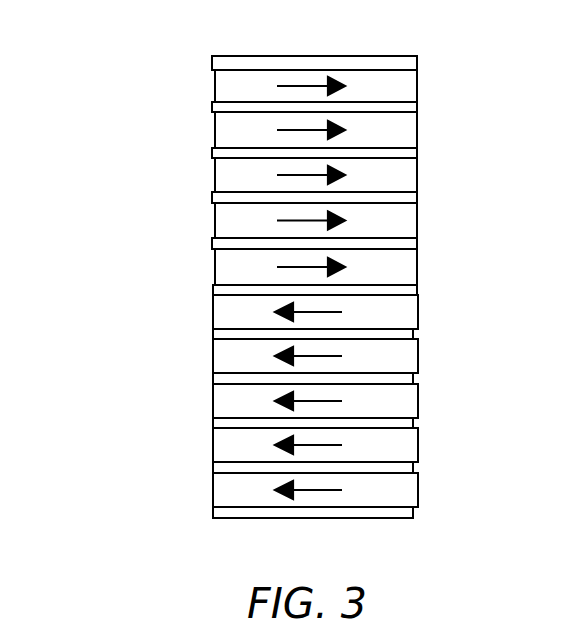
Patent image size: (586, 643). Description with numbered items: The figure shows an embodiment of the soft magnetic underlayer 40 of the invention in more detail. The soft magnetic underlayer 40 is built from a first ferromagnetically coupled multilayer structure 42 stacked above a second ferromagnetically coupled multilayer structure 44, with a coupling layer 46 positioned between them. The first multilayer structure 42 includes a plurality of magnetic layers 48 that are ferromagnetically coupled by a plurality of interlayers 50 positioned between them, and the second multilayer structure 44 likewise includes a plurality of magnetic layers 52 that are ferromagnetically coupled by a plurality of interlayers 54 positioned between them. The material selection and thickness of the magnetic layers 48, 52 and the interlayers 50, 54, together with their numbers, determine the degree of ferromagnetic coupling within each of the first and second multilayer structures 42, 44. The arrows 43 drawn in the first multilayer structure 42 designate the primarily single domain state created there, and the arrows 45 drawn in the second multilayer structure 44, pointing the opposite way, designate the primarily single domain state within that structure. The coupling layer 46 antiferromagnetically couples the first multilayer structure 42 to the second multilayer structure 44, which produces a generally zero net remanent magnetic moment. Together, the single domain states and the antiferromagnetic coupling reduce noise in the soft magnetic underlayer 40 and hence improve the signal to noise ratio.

The soft magnetic underlayer 40 is at (207, 57).
The first ferromagnetically coupled multilayer structure 42 is at (207, 57).
The arrows 43 is at (300, 86).
The second ferromagnetically coupled multilayer structure 44 is at (207, 296).
The arrows 45 is at (301, 312).
The coupling layer 46 is at (417, 290).
The magnetic layers 48 is at (417, 86).
The interlayers 50 is at (417, 63).
The magnetic layers 52 is at (418, 312).
The interlayers 54 is at (413, 334).